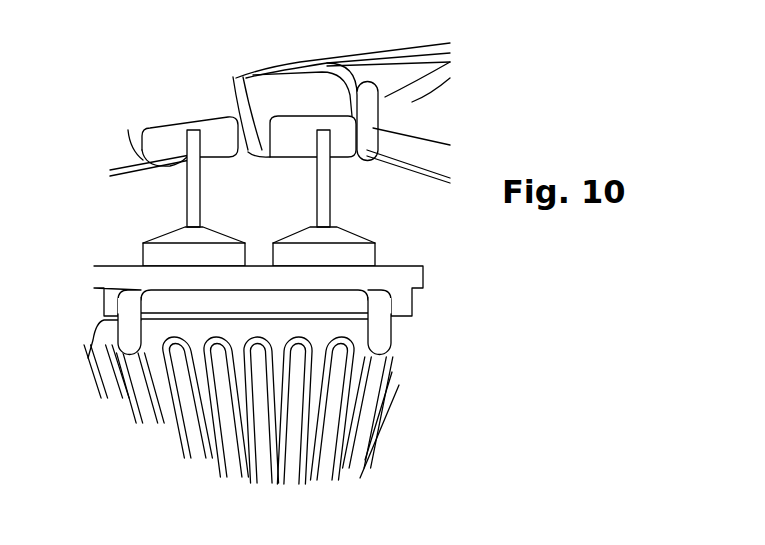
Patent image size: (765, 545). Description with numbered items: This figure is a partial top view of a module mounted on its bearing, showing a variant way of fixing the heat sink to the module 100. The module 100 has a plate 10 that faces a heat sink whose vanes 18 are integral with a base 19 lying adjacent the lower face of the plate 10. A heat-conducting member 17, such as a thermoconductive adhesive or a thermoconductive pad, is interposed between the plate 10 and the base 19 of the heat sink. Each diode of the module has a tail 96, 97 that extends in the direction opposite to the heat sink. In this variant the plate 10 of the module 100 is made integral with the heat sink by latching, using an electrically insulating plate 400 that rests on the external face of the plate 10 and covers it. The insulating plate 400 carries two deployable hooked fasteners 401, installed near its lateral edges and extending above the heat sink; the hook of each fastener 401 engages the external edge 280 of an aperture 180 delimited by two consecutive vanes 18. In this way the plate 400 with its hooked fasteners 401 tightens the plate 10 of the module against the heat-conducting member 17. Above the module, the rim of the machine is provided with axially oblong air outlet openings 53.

The plate 10 is at (102, 304).
The heat-conducting member 17 is at (155, 345).
The vanes 18 is at (308, 403).
The base 19 is at (317, 332).
The air outlet openings 53 is at (348, 133).
The tail 96 is at (330, 192).
The tail 97 is at (187, 180).
The module 100 is at (223, 217).
The aperture 180 is at (258, 422).
The external edge 280 is at (220, 365).
The electrically insulating plate 400 is at (440, 273).
The hooked fastener 401 is at (378, 332).